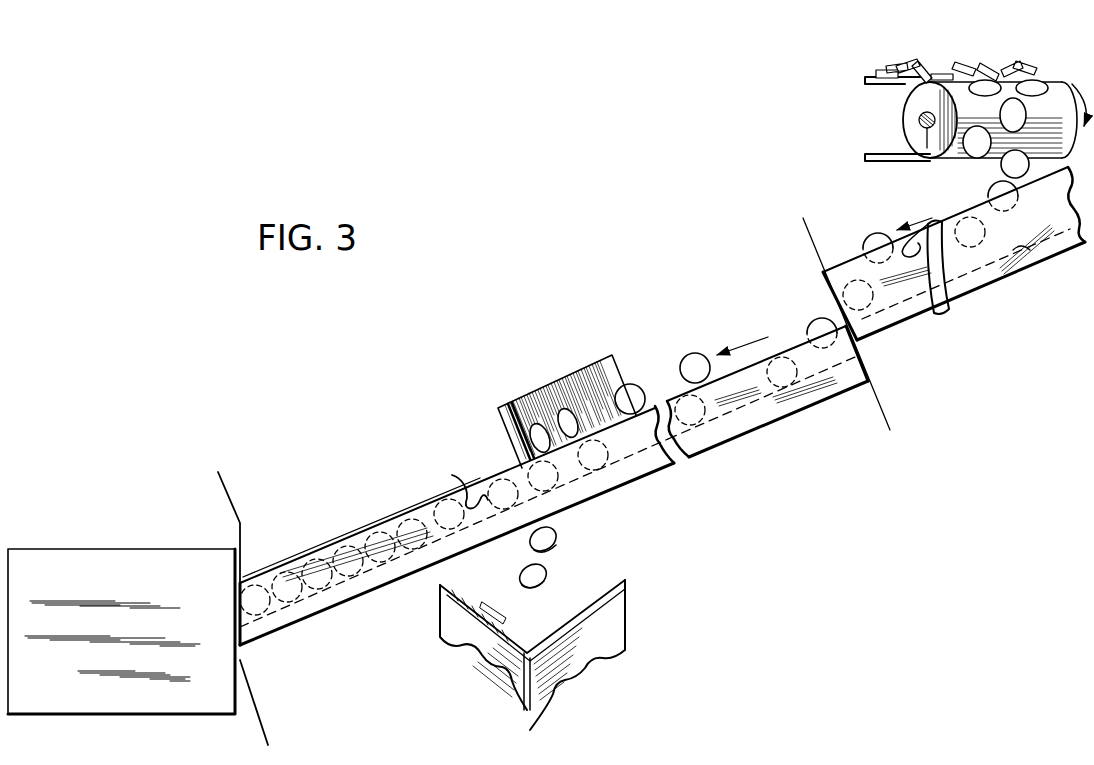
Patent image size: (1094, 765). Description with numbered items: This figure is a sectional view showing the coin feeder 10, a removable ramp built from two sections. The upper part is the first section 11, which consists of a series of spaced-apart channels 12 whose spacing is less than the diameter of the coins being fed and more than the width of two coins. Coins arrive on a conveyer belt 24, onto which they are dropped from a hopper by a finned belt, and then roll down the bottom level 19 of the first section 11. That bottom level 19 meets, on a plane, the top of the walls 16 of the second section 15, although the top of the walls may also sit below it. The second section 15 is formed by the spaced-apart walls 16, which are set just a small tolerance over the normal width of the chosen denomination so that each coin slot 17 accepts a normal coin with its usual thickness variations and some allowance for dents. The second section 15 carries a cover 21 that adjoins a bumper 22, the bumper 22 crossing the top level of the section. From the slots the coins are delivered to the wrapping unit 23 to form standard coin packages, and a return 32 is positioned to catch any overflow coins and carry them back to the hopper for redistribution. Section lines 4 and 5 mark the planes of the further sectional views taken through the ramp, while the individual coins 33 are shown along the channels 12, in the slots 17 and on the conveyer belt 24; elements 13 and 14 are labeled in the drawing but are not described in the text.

The section line 4- 4 is at (810, 240).
The section line 5- 5 is at (221, 485).
The coin feeder 10 is at (829, 540).
The first section 11 is at (992, 305).
The channels 12 is at (858, 272).
The track end wall 13 is at (824, 277).
The flexible gate strip 14 is at (933, 281).
The second section 15 is at (647, 485).
The walls 16 is at (522, 477).
The coin slot 17 is at (454, 487).
The bottom level 19 is at (1033, 257).
The cover 21 is at (345, 512).
The bumper 22 is at (500, 410).
The wrapping unit 23 is at (32, 555).
The conveyer belt 24 is at (887, 90).
The return 32 is at (617, 627).
The tablets 33 is at (928, 68).